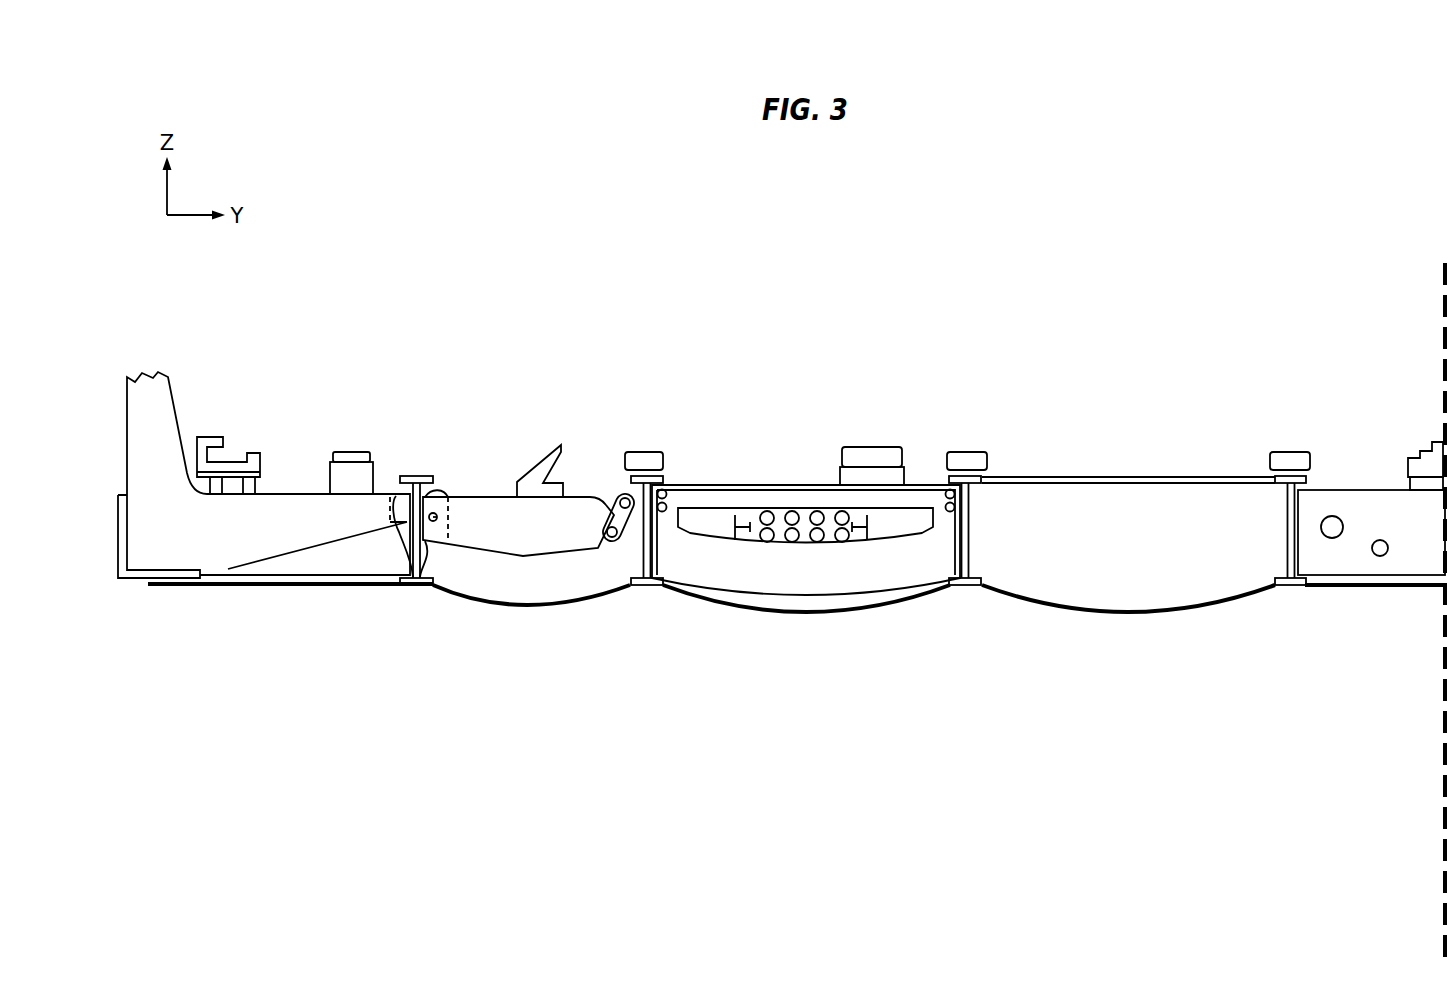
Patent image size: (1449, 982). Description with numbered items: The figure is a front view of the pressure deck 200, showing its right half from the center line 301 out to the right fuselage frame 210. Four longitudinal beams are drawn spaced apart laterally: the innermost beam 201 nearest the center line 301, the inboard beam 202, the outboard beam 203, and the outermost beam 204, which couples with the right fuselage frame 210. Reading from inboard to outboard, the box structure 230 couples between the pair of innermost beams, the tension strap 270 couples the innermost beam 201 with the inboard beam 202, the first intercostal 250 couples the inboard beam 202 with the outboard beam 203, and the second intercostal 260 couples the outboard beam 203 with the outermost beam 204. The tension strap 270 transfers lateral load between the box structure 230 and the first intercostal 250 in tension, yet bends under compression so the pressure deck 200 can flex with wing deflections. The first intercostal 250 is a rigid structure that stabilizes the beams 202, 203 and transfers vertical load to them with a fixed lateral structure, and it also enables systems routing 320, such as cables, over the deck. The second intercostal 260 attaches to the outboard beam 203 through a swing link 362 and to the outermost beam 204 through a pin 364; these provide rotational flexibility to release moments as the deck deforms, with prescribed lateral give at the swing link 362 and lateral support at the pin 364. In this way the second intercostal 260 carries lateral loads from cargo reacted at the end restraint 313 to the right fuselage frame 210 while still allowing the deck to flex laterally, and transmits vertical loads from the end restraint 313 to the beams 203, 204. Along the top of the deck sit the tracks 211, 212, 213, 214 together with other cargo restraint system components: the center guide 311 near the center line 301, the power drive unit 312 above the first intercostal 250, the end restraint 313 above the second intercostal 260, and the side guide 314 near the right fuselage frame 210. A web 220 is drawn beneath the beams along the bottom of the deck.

The pressure deck 200 is at (997, 218).
The innermost beam 201 is at (1290, 587).
The inboard beam 202 is at (965, 587).
The outboard beam 203 is at (643, 587).
The outermost beam 204 is at (417, 587).
The right fuselage frame 210 is at (127, 380).
The track 211 is at (1268, 460).
The track 212 is at (965, 452).
The track 213 is at (638, 452).
The track 214 is at (353, 451).
The web 220 is at (152, 594).
The box structure 230 is at (1344, 437).
The first intercostal 250 is at (751, 474).
The second intercostal 260 is at (467, 482).
The tension strap 270 is at (1108, 477).
The center line 301 is at (1443, 293).
The center guide 311 is at (1430, 442).
The power drive unit (PDU) 312 is at (870, 447).
The end restraint 313 is at (538, 463).
The side guide 314 is at (238, 465).
The systems routing 320 is at (797, 556).
The swing link 362 is at (598, 556).
The pin 364 is at (437, 520).